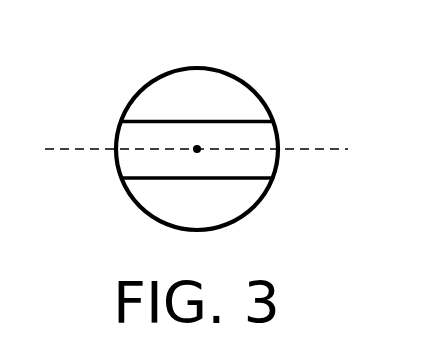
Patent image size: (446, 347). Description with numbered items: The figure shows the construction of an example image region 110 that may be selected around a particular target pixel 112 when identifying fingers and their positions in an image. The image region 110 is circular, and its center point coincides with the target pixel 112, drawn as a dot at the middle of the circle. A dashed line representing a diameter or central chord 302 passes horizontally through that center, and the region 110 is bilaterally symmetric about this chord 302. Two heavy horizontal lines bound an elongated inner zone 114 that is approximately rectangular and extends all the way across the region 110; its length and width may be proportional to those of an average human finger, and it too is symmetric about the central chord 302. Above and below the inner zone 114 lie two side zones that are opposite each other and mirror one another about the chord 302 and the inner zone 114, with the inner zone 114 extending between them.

The image region 110 is at (176, 71).
The target pixel 112 is at (195, 150).
The inner zone 114 is at (127, 130).
The central chord 302 is at (327, 147).